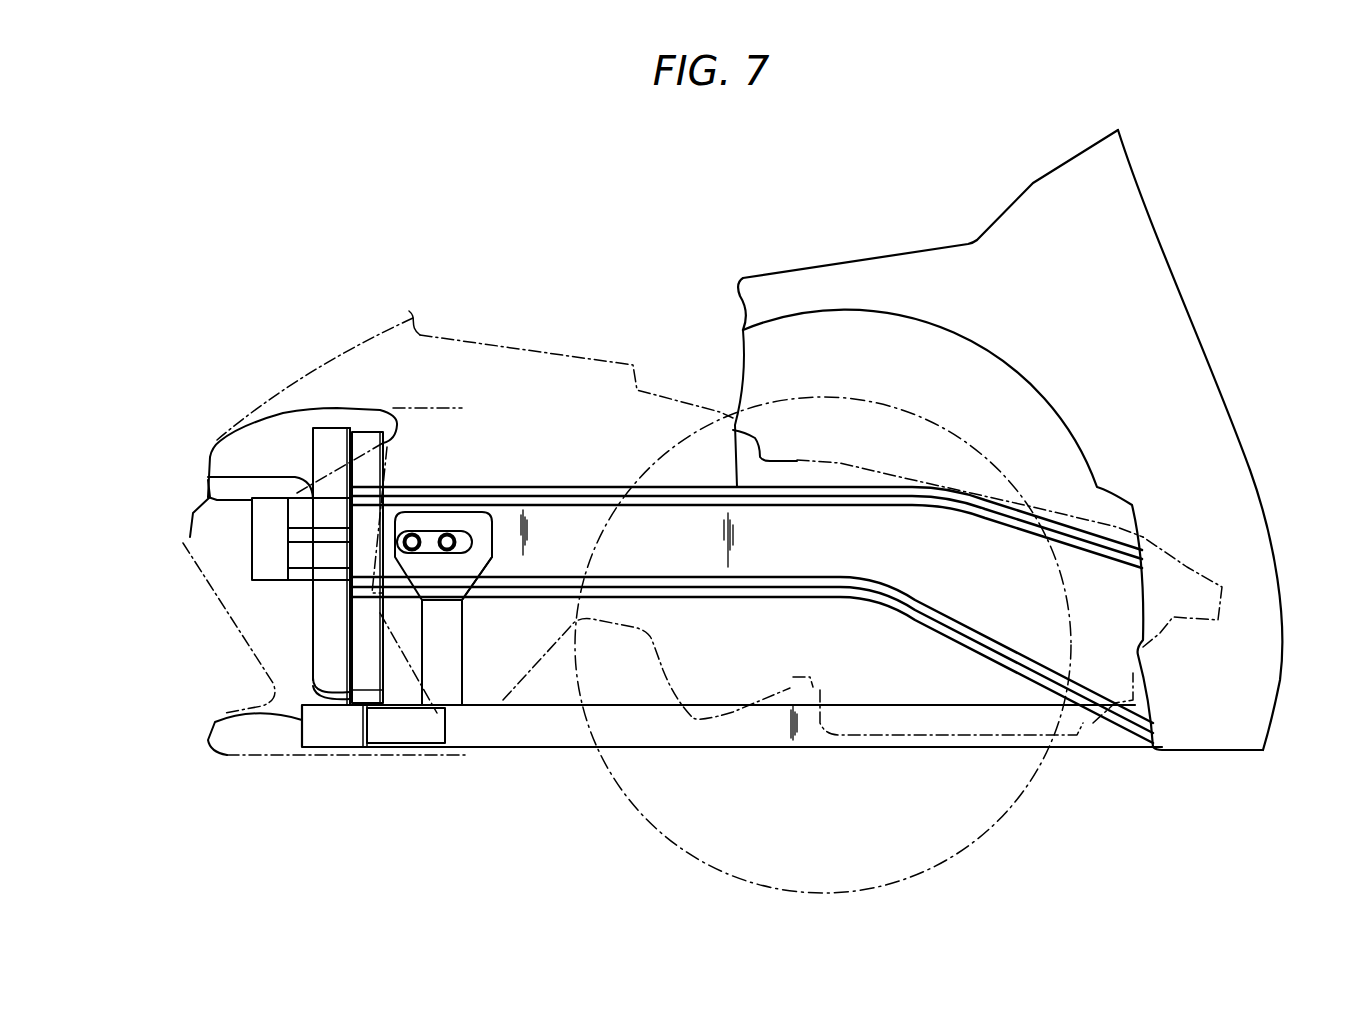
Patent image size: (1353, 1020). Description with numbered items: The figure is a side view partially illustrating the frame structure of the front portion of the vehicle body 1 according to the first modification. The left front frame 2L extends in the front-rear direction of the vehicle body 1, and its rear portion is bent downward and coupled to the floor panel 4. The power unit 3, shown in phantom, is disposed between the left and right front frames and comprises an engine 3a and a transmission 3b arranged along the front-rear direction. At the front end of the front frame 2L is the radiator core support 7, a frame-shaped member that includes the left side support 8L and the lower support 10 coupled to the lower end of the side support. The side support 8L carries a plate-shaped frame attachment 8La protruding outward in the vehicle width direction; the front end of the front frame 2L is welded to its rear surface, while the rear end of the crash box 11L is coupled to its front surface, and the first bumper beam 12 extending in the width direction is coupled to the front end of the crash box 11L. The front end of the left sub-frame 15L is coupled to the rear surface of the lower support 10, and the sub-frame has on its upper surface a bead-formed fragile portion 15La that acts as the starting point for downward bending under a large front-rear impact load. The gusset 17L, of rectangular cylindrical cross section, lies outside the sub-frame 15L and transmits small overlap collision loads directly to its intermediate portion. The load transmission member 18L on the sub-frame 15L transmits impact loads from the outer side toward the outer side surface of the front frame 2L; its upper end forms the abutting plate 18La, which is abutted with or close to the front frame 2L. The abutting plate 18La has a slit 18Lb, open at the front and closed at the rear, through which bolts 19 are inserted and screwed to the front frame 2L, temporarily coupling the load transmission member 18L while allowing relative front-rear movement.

The vehicle body 1 is at (383, 271).
The left front frame 2L is at (563, 484).
The power unit 3 is at (560, 344).
The engine 3a is at (632, 363).
The transmission 3b is at (837, 462).
The floor panel 4 is at (1200, 750).
The radiator core support 7 is at (293, 430).
The left side support 8L is at (313, 647).
The frame attachment 8La is at (313, 597).
The lower support 10 is at (210, 745).
The left crash box 11L is at (208, 477).
The first bumper beam 12 is at (262, 533).
The left sub-frame 15L is at (697, 747).
The fragile portion 15La is at (530, 705).
The gusset 17L is at (390, 743).
The load transmission member 18L is at (462, 680).
The abutting plate 18La is at (492, 565).
The slit 18Lb is at (458, 408).
The bolt 19 is at (450, 530).